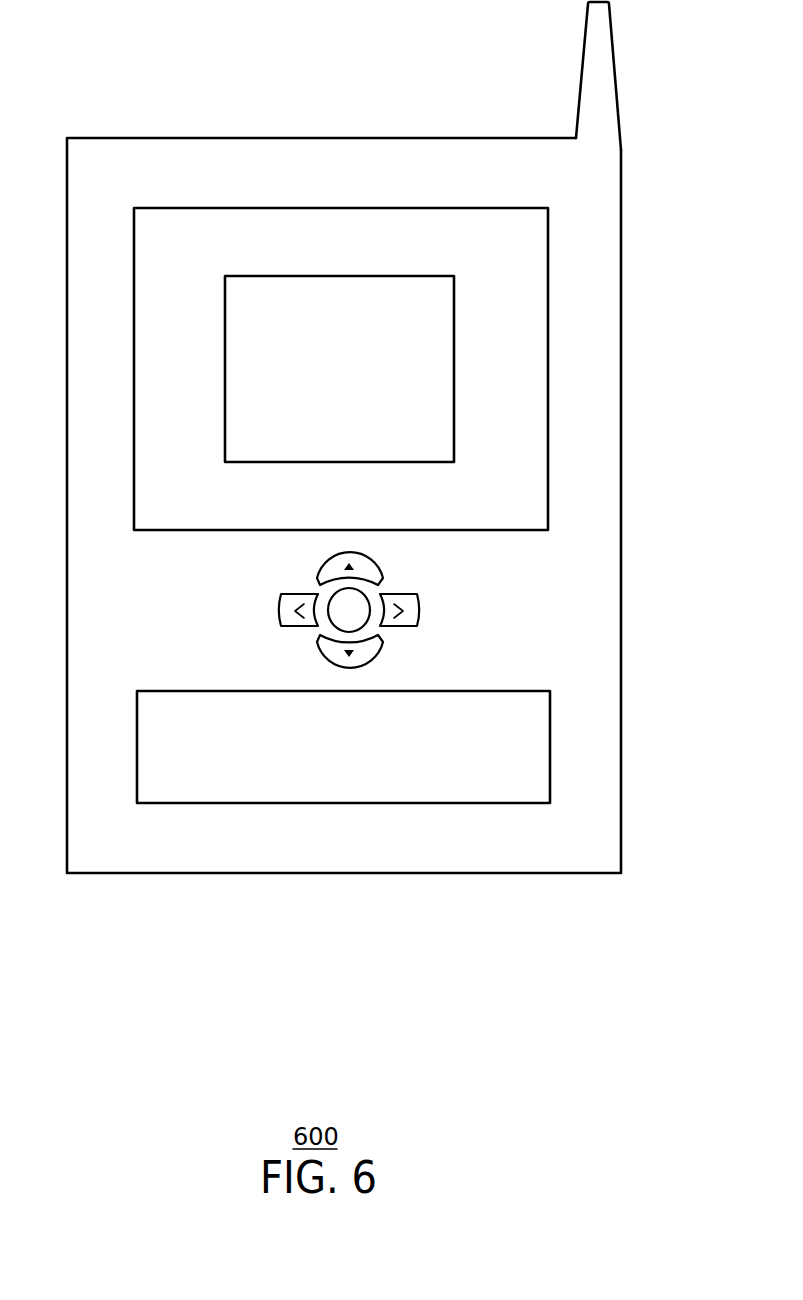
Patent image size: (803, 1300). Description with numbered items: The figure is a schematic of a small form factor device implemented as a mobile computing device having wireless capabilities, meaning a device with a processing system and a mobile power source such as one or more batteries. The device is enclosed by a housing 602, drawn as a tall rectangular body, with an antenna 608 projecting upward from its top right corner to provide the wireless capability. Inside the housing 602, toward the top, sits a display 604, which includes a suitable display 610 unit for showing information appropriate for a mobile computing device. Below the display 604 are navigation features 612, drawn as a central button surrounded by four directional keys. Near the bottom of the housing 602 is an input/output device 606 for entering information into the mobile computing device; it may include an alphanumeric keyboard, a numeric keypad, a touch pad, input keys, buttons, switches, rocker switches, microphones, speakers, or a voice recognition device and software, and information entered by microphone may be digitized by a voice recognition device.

The housing 602 is at (621, 489).
The display 604 is at (488, 207).
The input/output (I/O) device 606 is at (551, 718).
The antenna 608 is at (581, 47).
The display unit 610 is at (397, 276).
The navigation features 612 is at (430, 603).